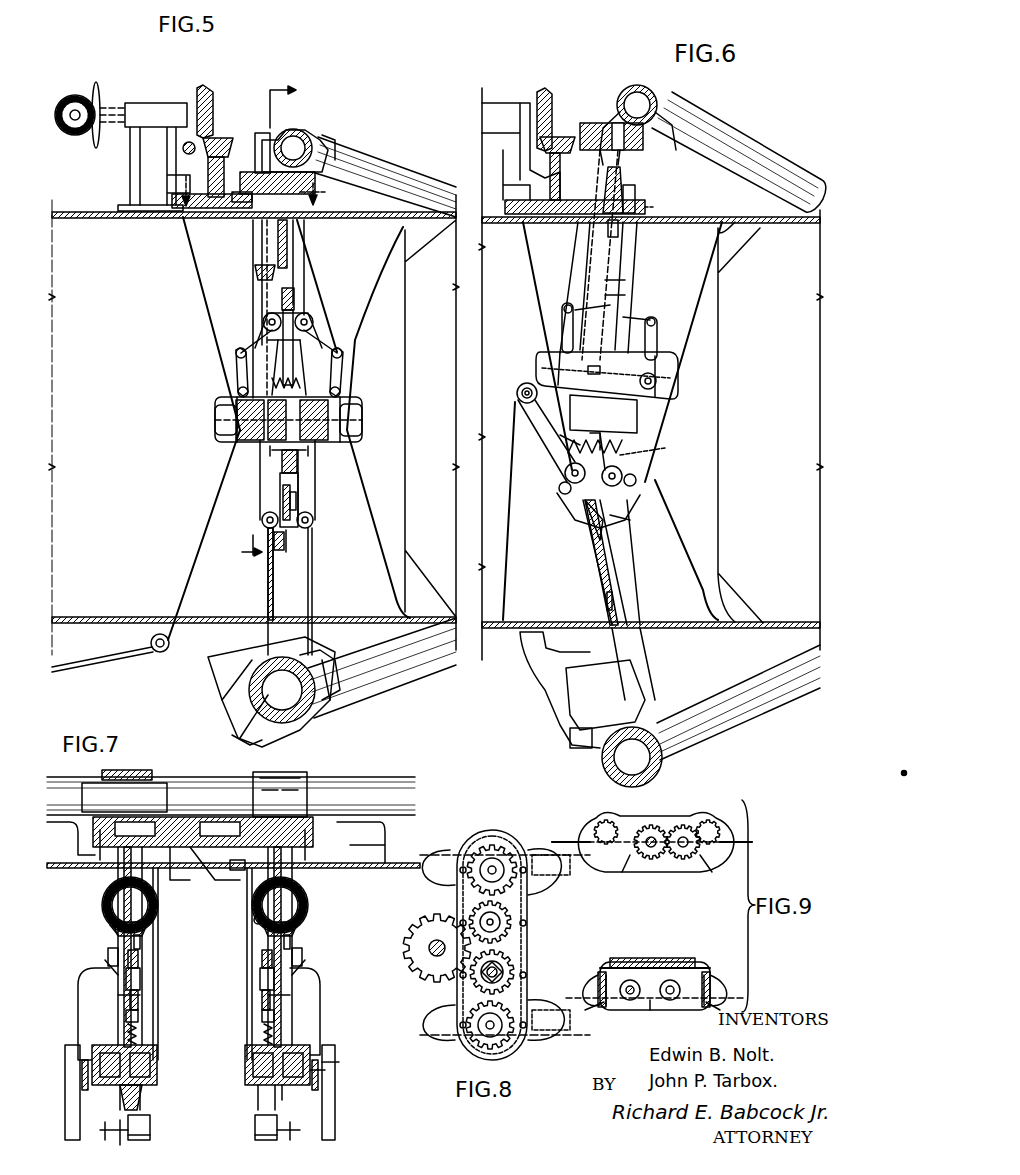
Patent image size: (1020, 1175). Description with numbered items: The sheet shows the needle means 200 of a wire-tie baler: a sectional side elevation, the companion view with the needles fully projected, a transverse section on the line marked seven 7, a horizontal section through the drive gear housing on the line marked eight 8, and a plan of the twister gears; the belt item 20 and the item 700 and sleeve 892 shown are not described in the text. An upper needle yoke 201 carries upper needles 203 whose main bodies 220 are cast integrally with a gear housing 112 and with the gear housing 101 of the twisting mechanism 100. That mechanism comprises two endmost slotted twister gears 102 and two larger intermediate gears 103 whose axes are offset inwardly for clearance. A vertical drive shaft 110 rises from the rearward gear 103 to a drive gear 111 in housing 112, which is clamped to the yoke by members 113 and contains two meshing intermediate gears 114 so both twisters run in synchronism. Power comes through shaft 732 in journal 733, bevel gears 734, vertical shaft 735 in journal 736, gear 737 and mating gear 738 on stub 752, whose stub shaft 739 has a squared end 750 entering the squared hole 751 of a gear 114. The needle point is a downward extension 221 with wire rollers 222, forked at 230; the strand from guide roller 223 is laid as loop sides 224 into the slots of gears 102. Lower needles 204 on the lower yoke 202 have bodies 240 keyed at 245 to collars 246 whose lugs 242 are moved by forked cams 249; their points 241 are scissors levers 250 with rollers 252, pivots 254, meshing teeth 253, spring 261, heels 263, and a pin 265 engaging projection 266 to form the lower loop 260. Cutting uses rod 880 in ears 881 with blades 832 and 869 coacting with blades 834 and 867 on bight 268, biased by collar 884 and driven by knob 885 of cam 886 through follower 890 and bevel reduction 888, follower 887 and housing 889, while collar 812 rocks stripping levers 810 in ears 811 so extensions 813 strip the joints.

In FIG. 5, the section line 7- 7 is at (269, 320).
In FIG. 5, the section line 8- 8 is at (255, 194).
In FIG. 5, the drive belt 20 is at (130, 626).
In FIG. 5, the twisting mechanism 100 is at (301, 419).
In FIG. 6, the twisting mechanism 100 is at (624, 375).
In FIG. 7, the twisting mechanism 100 is at (201, 1065).
In FIG. 5, the gear housing 101 is at (352, 401).
In FIG. 6, the gear housing 101 is at (678, 362).
In FIG. 9, the gear housing 101 is at (655, 870).
In FIG. 5, the slotted twister gear 102 is at (225, 410).
In FIG. 9, the slotted twister gear 102 is at (606, 820).
In FIG. 7, the intermediate gear 103 is at (250, 1055).
In FIG. 9, the intermediate gear 103 is at (628, 866).
In FIG. 5, the drive shaft 110 is at (262, 262).
In FIG. 6, the drive shaft 110 is at (590, 262).
In FIG. 7, the drive shaft 110 is at (118, 1033).
In FIG. 8, the drive shaft 110 is at (470, 870).
In FIG. 9, the drive shaft 110 is at (653, 835).
In FIG. 7, the drive gear 111 is at (100, 862).
In FIG. 8, the drive gear 111 is at (492, 840).
In FIG. 5, the gear housing 112 is at (262, 135).
In FIG. 6, the gear housing 112 is at (588, 122).
In FIG. 7, the gear housing 112 is at (200, 818).
In FIG. 8, the gear housing 112 is at (530, 935).
In FIG. 5, the clamping member 113 is at (328, 130).
In FIG. 7, the clamping member 113 is at (135, 772).
In FIG. 7, the intermediate gear 114 is at (190, 870).
In FIG. 8, the intermediate gear 114 is at (512, 918).
In FIG. 5, the needle means 200 is at (305, 399).
In FIG. 6, the needle means 200 is at (640, 377).
In FIG. 7, the needle means 200 is at (200, 964).
In FIG. 5, the upper needle yoke 201 is at (380, 166).
In FIG. 6, the upper needle yoke 201 is at (752, 150).
In FIG. 7, the upper needle yoke 201 is at (365, 778).
In FIG. 5, the lower needle yoke 202 is at (302, 702).
In FIG. 6, the lower needle yoke 202 is at (752, 714).
In FIG. 5, the upper needle 203 is at (302, 290).
In FIG. 6, the upper needle 203 is at (640, 297).
In FIG. 5, the lower needle 204 is at (312, 546).
In FIG. 6, the lower needle 204 is at (633, 566).
In FIG. 7, the lower needle 204 is at (68, 1120).
In FIG. 5, the main body of upper needle 220 is at (260, 285).
In FIG. 6, the main body of upper needle 220 is at (652, 317).
In FIG. 7, the main body of upper needle 220 is at (262, 935).
In FIG. 5, the downward extension 221 is at (310, 476).
In FIG. 6, the downward extension 221 is at (625, 428).
In FIG. 7, the downward extension 221 is at (230, 1098).
In FIG. 5, the wire engaging roller 222 is at (261, 518).
In FIG. 6, the wire engaging roller 222 is at (622, 477).
In FIG. 5, the guide roller 223 is at (160, 212).
In FIG. 6, the guide roller 223 is at (505, 222).
In FIG. 5, the side of wire loop 224 is at (200, 287).
In FIG. 6, the side of wire loop 224 is at (532, 293).
In FIG. 5, the fork opening 230 is at (279, 492).
In FIG. 6, the fork opening 230 is at (630, 445).
In FIG. 7, the fork opening 230 is at (230, 1120).
In FIG. 5, the main body of lower needle 240 is at (305, 596).
In FIG. 6, the main body of lower needle 240 is at (622, 596).
In FIG. 5, the point portion of lower needle 241 is at (312, 351).
In FIG. 6, the point portion of lower needle 241 is at (555, 468).
In FIG. 5, the follower lug 242 is at (215, 668).
In FIG. 6, the follower lug 242 is at (570, 740).
In FIG. 5, the key means 245 is at (320, 656).
In FIG. 5, the mounting collar 246 is at (240, 708).
In FIG. 5, the forked cam 249 is at (230, 692).
In FIG. 6, the forked cam 249 is at (558, 700).
In FIG. 5, the scissors-like lever 250 is at (306, 330).
In FIG. 6, the scissors-like lever 250 is at (605, 412).
In FIG. 7, the scissors-like lever 250 is at (320, 1015).
In FIG. 6, the wire engaging roller 252 is at (650, 370).
In FIG. 6, the meshing teeth 253 is at (585, 508).
In FIG. 7, the meshing teeth 253 is at (320, 1090).
In FIG. 6, the pivot 254 is at (630, 487).
In FIG. 7, the pivot 254 is at (336, 1068).
In FIG. 5, the lower wire loop 260 is at (362, 530).
In FIG. 6, the lower wire loop 260 is at (518, 514).
In FIG. 6, the spiral spring 261 is at (664, 447).
In FIG. 6, the heel portion 263 is at (625, 518).
In FIG. 7, the pin 265 is at (280, 1104).
In FIG. 7, the projection 266 is at (325, 1045).
In FIG. 5, the bight 268 is at (300, 298).
In FIG. 5, the handwheel 700 is at (102, 105).
In FIG. 5, the forwardly extending shaft 732 is at (172, 105).
In FIG. 5, the journal 733 is at (158, 105).
In FIG. 6, the journal 733 is at (521, 151).
In FIG. 5, the bevel gear 734 is at (205, 108).
In FIG. 6, the bevel gear 734 is at (556, 135).
In FIG. 5, the vertical shaft 735 is at (222, 145).
In FIG. 6, the vertical shaft 735 is at (550, 214).
In FIG. 5, the journal 736 is at (232, 170).
In FIG. 5, the gear 737 is at (210, 214).
In FIG. 6, the gear 737 is at (565, 216).
In FIG. 5, the mating gear 738 is at (312, 200).
In FIG. 6, the mating gear 738 is at (650, 207).
In FIG. 7, the mating gear 738 is at (240, 872).
In FIG. 8, the mating gear 738 is at (508, 975).
In FIG. 5, the stub shaft 739 is at (302, 132).
In FIG. 6, the stub shaft 739 is at (625, 170).
In FIG. 5, the squared upper end 750 is at (318, 128).
In FIG. 6, the squared upper end 750 is at (608, 170).
In FIG. 8, the squared upper end 750 is at (512, 962).
In FIG. 6, the squared central hole 751 is at (612, 108).
In FIG. 6, the stub 752 is at (636, 190).
In FIG. 5, the bell crank joint stripping lever 810 is at (342, 366).
In FIG. 7, the bell crank joint stripping lever 810 is at (262, 1010).
In FIG. 9, the bell crank joint stripping lever 810 is at (680, 965).
In FIG. 5, the bearing ear 811 is at (337, 352).
In FIG. 9, the bearing ear 811 is at (610, 970).
In FIG. 5, the collar 812 is at (262, 348).
In FIG. 7, the collar 812 is at (128, 1000).
In FIG. 5, the bell crank extension 813 is at (340, 390).
In FIG. 9, the bell crank extension 813 is at (630, 1026).
In FIG. 7, the lower movable blade 832 is at (148, 1135).
In FIG. 5, the cutter blade 834 is at (276, 545).
In FIG. 6, the cutter blade 834 is at (604, 600).
In FIG. 7, the fixed cutter blade 867 is at (105, 965).
In FIG. 5, the upper movable blade 869 is at (268, 296).
In FIG. 7, the upper movable blade 869 is at (110, 950).
In FIG. 5, the reciprocable rod 880 is at (278, 451).
In FIG. 6, the reciprocable rod 880 is at (570, 448).
In FIG. 7, the reciprocable rod 880 is at (262, 958).
In FIG. 9, the reciprocable rod 880 is at (660, 968).
In FIG. 5, the bearing ear 881 is at (270, 341).
In FIG. 7, the bearing ear 881 is at (260, 985).
In FIG. 7, the collar 884 is at (262, 1022).
In FIG. 7, the knob 885 is at (240, 920).
In FIG. 5, the cam member 886 is at (290, 232).
In FIG. 7, the follower 887 is at (102, 900).
In FIG. 7, the bevel gear 888 is at (112, 925).
In FIG. 6, the enclosure housing 889 is at (622, 248).
In FIG. 7, the enclosure housing 889 is at (145, 895).
In FIG. 7, the follower 890 is at (255, 920).
In FIG. 5, the sleeve 892 is at (298, 500).